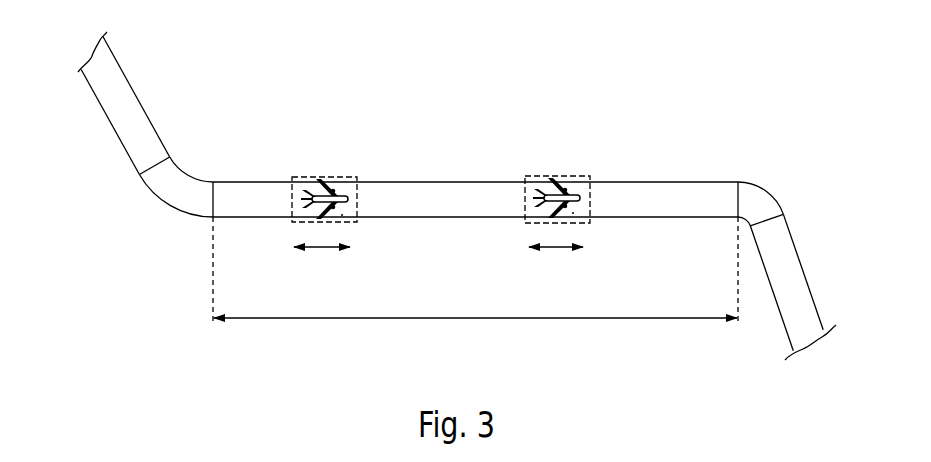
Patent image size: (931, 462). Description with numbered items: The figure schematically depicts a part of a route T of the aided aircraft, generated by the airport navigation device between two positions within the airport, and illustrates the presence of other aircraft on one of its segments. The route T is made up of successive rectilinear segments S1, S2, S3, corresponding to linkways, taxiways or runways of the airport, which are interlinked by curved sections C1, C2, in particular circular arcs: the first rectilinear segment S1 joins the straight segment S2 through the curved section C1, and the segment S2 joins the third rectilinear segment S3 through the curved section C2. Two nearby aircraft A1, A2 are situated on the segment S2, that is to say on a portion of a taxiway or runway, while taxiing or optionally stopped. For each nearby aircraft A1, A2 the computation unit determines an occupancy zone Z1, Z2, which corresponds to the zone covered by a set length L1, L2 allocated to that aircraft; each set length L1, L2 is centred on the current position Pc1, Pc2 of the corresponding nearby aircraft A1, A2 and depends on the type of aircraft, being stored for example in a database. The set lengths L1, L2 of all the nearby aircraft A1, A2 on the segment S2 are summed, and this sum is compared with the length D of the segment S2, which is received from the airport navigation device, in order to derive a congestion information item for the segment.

The route T is at (448, 196).
The rectilinear segment S1 is at (111, 120).
The curved section C1 is at (155, 198).
The rectilinear segment S2 is at (240, 182).
The curved section C2 is at (767, 183).
The rectilinear segment S3 is at (797, 237).
The occupancy zone Z1 is at (338, 177).
The occupancy zone Z2 is at (558, 176).
The nearby aircraft A1 is at (321, 184).
The nearby aircraft A2 is at (560, 186).
The current position Pc1 is at (344, 216).
The current position Pc2 is at (575, 214).
The set length L1 is at (327, 250).
The set length L2 is at (560, 250).
The length of the segment D is at (488, 322).